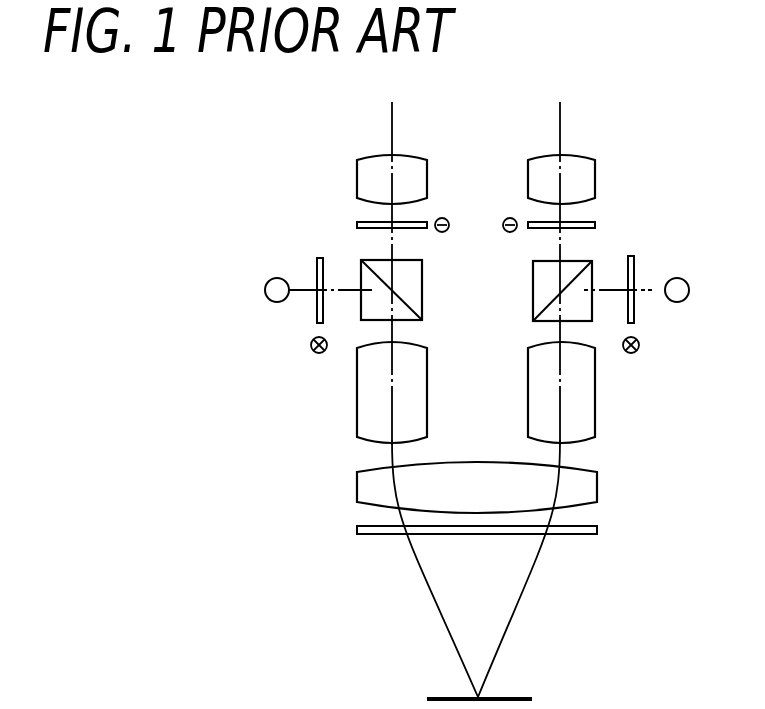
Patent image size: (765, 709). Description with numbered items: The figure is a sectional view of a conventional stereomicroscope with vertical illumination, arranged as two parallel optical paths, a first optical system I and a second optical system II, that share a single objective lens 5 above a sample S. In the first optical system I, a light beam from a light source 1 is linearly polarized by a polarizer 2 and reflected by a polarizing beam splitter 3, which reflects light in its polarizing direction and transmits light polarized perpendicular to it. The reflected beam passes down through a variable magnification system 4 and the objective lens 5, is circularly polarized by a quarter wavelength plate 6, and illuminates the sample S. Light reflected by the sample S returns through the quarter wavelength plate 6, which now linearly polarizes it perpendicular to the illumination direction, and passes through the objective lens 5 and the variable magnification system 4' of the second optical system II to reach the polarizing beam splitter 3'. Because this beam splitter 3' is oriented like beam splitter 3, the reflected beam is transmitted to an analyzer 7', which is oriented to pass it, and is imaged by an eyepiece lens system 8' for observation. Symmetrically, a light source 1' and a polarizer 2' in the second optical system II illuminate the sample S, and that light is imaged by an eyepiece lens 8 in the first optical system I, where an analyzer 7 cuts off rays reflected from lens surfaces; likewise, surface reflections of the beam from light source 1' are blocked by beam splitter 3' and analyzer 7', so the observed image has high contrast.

The light source 1 is at (701, 275).
The light source 1' is at (258, 277).
The polarizer 2 is at (653, 271).
The polarizer 2' is at (299, 272).
The polarizing beam splitter 3 is at (539, 298).
The polarizing beam splitter 3' is at (418, 286).
The variable magnification system 4 is at (598, 392).
The variable magnification system 4' is at (363, 392).
The objective lens 5 is at (597, 485).
The quarter wavelength plate 6 is at (597, 531).
The analyzer 7 is at (590, 204).
The analyzer 7' is at (369, 204).
The eyepiece lens 8 is at (593, 172).
The eyepiece lens system 8' is at (366, 172).
The sample S is at (518, 697).
The first optical system I is at (560, 86).
The second optical system II is at (392, 86).